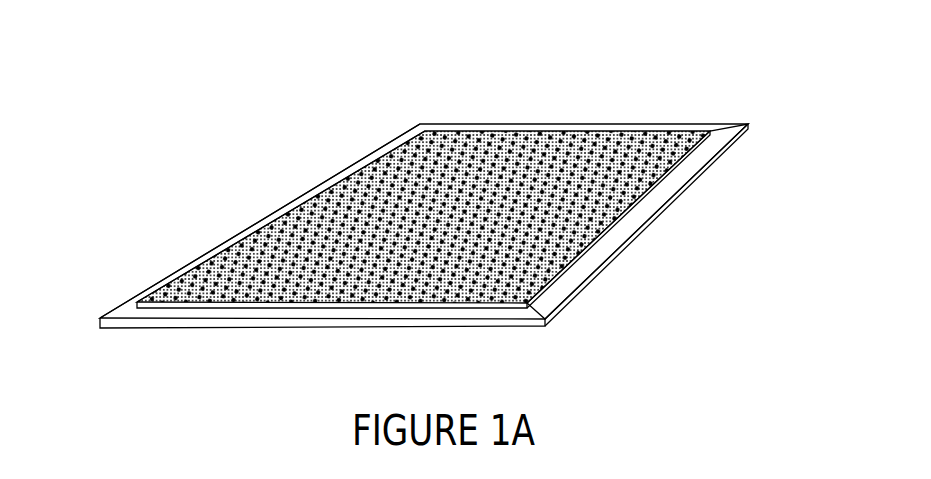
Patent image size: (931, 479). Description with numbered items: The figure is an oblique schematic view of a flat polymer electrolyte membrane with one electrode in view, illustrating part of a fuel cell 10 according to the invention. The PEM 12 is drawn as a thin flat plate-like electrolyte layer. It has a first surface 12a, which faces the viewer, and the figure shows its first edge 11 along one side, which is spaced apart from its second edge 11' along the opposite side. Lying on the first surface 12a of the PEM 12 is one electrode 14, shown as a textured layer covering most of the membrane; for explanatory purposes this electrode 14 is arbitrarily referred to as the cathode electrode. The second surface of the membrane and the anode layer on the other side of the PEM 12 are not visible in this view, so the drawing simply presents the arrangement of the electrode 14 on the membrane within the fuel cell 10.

The fuel cell 10 is at (568, 92).
The first edge 11 is at (678, 221).
The second edge 11' is at (264, 216).
The PEM 12 is at (583, 272).
The first surface 12a is at (128, 312).
The electrode 14 is at (380, 203).